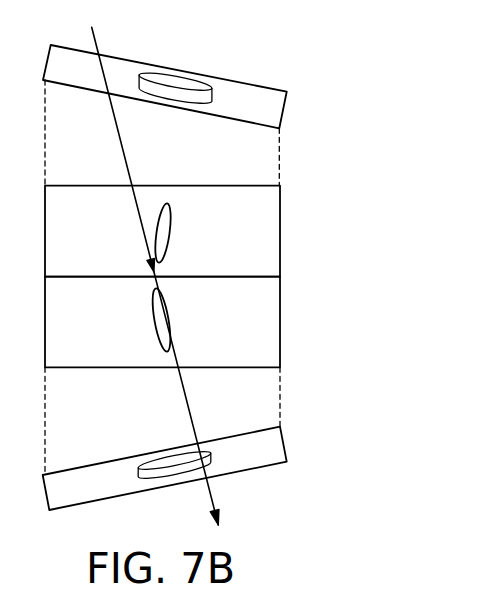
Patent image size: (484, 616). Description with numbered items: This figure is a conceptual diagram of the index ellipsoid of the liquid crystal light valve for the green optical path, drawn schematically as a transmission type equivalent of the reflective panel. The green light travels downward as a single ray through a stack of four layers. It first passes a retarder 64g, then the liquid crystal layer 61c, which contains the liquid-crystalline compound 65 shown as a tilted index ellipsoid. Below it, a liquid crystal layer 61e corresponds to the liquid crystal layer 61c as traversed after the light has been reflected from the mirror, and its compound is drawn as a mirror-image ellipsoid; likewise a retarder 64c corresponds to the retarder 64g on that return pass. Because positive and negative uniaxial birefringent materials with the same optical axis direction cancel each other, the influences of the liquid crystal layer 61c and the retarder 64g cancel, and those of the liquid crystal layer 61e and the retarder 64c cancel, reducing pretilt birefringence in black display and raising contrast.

The retarder 64g is at (283, 114).
The retarder 64c is at (281, 432).
The liquid crystal layer 61c is at (276, 236).
The liquid crystal layer 61e is at (276, 323).
The liquid-crystalline compound 65 is at (170, 230).